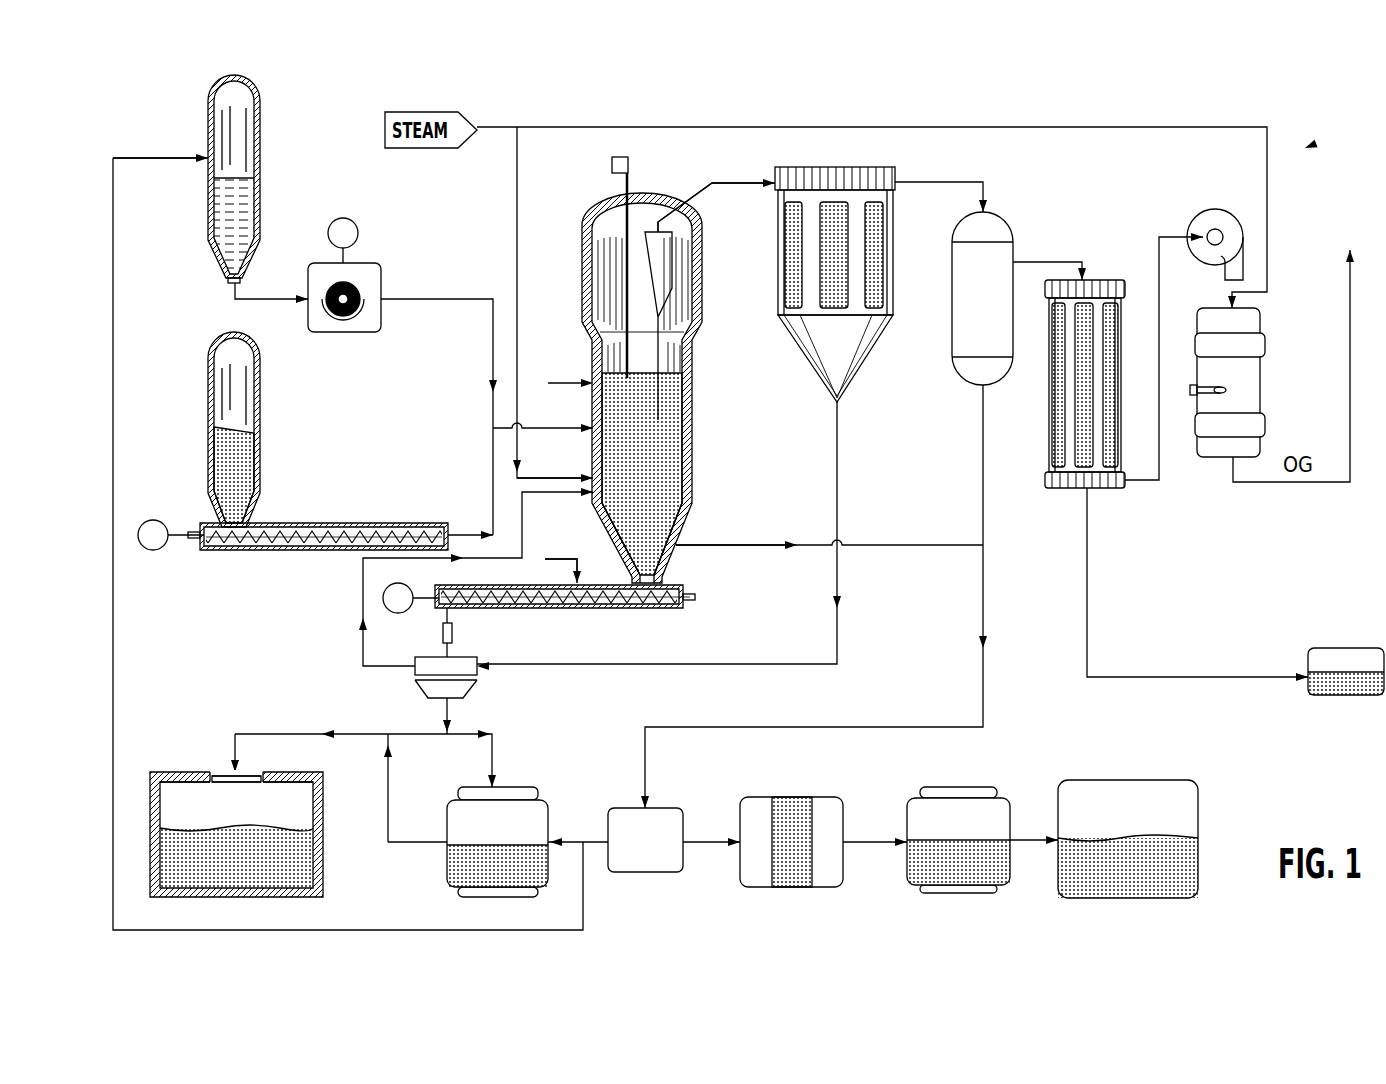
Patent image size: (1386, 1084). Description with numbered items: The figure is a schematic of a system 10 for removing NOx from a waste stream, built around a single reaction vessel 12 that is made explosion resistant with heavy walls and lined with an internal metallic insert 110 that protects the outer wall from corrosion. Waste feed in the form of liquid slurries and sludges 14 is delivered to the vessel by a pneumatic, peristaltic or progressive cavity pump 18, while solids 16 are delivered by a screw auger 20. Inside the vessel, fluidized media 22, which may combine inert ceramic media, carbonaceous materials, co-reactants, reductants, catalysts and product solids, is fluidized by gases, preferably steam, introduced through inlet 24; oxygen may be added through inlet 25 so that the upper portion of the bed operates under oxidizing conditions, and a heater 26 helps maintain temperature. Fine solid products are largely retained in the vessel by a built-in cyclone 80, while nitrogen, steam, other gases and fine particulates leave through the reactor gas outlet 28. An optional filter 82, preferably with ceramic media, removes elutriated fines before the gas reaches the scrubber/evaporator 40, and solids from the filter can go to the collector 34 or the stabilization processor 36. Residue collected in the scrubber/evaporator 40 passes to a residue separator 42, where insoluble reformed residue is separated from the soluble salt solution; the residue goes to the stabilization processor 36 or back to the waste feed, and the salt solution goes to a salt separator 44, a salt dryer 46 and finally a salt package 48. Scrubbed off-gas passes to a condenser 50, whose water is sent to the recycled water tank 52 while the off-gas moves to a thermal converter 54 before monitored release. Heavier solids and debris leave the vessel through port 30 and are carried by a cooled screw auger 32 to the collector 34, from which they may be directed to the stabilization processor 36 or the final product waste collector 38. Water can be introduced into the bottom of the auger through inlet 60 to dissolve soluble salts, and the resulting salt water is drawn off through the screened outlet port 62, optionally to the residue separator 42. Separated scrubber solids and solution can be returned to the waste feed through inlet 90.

The system 10 is at (1305, 148).
The reaction vessel 12 is at (640, 368).
The liquid slurries and sludges 14 is at (264, 126).
The solids 16 is at (262, 423).
The pump 18 is at (381, 283).
The screw auger 20 is at (270, 550).
The fluidized media 22 is at (681, 519).
The inlet 24 is at (550, 478).
The inlet 25 is at (548, 383).
The heater 26 is at (630, 165).
The reactor gas outlet 28 is at (745, 183).
The port 30 is at (660, 581).
The screw auger 32 is at (435, 610).
The collector 34 is at (418, 690).
The stabilization processor 36 is at (505, 788).
The final product waste collector 38 is at (202, 772).
The scrubber/evaporator 40 is at (1006, 231).
The residue separator 42 is at (665, 808).
The salt separator 44 is at (828, 798).
The salt dryer 46 is at (958, 787).
The salt package 48 is at (1100, 780).
The condenser 50 is at (1110, 280).
The recycled water tank 52 is at (1342, 696).
The thermal converter 54 is at (1262, 370).
The inlet 60 is at (565, 558).
The screened outlet port 62 is at (749, 545).
The cyclone 80 is at (662, 272).
The filter 82 is at (882, 170).
The inlet 90 is at (162, 157).
The internal metallic insert 110 is at (690, 402).